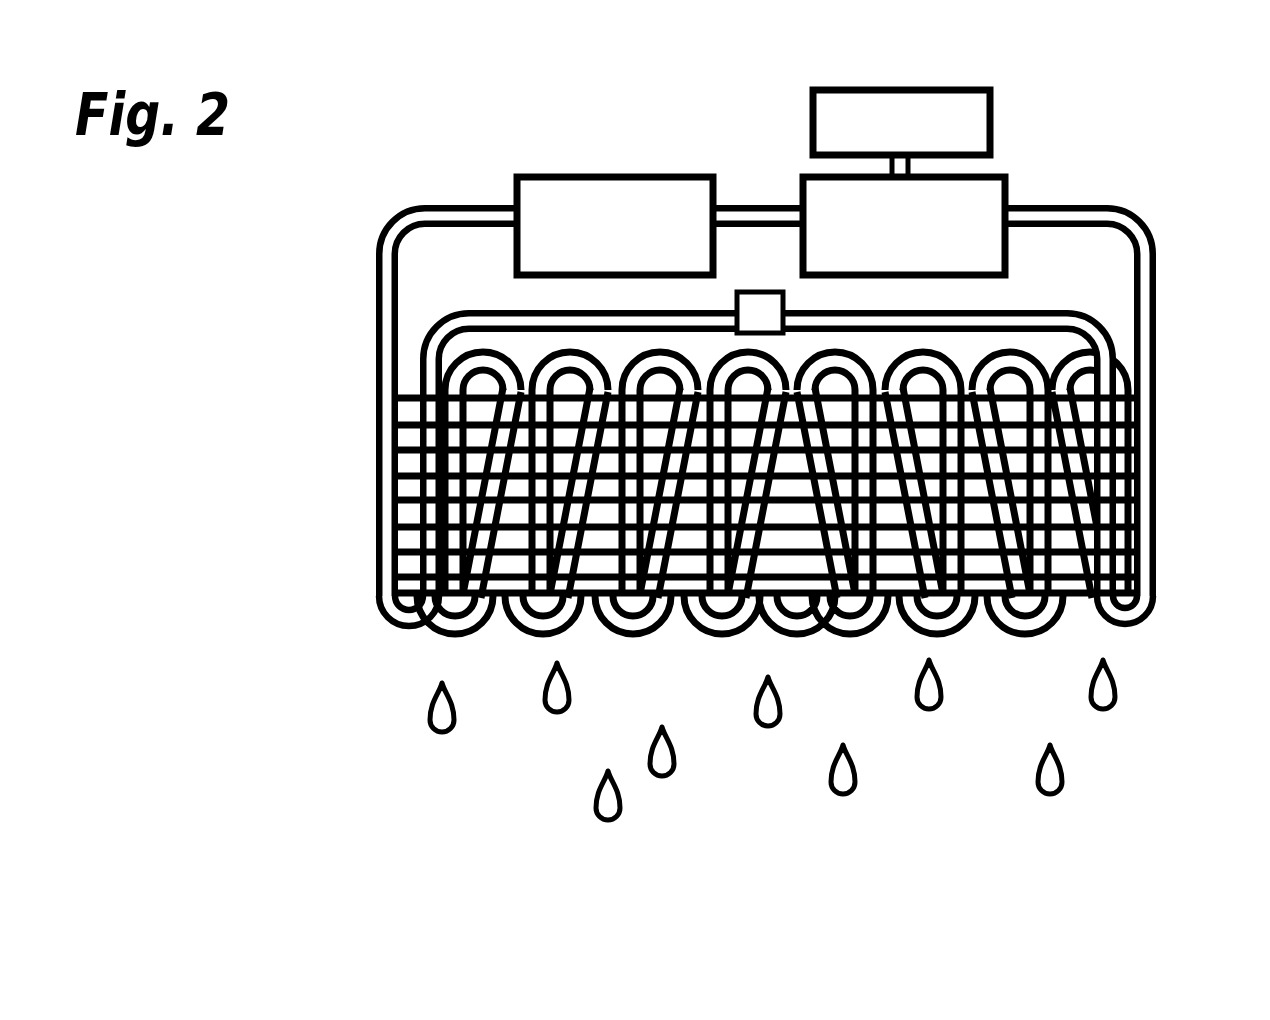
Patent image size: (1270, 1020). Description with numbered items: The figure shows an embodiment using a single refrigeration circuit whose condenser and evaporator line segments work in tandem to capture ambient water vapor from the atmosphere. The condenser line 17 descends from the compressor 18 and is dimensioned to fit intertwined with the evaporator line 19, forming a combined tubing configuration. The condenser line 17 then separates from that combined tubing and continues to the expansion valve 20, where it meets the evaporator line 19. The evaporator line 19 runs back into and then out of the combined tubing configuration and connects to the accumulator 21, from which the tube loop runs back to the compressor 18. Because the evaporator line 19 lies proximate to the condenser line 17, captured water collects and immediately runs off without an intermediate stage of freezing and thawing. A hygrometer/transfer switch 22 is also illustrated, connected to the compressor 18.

The condenser line 17 is at (1152, 400).
The compressor 18 is at (925, 243).
The evaporator line 19 is at (378, 400).
The expansion valve 20 is at (760, 318).
The accumulator 21 is at (634, 243).
The hygrometer/transfer switch 22 is at (918, 140).